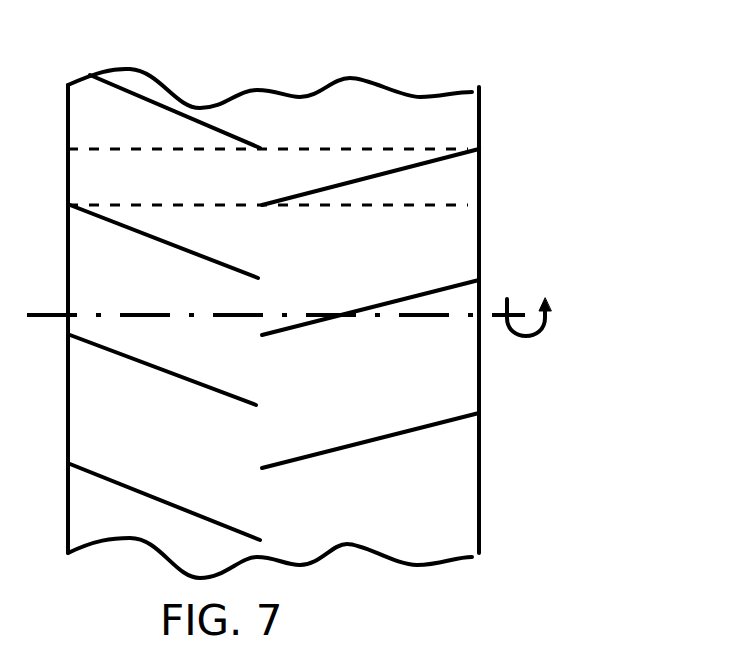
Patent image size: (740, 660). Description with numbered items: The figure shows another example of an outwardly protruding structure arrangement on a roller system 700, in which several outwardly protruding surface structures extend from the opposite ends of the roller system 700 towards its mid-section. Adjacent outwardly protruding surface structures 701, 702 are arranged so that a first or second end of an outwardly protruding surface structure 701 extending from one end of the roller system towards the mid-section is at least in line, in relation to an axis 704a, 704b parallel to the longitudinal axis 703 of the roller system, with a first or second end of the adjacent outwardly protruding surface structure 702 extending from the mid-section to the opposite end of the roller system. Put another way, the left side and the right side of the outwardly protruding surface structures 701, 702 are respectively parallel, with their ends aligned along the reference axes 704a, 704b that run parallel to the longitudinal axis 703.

The roller system 700 is at (319, 290).
The outwardly protruding surface structure 701 is at (318, 241).
The outwardly protruding surface structure 702 is at (352, 185).
The longitudinal axis of the roller system 703 is at (62, 312).
The axis parallel to the longitudinal axis 704a is at (118, 205).
The axis parallel to the longitudinal axis 704b is at (292, 148).